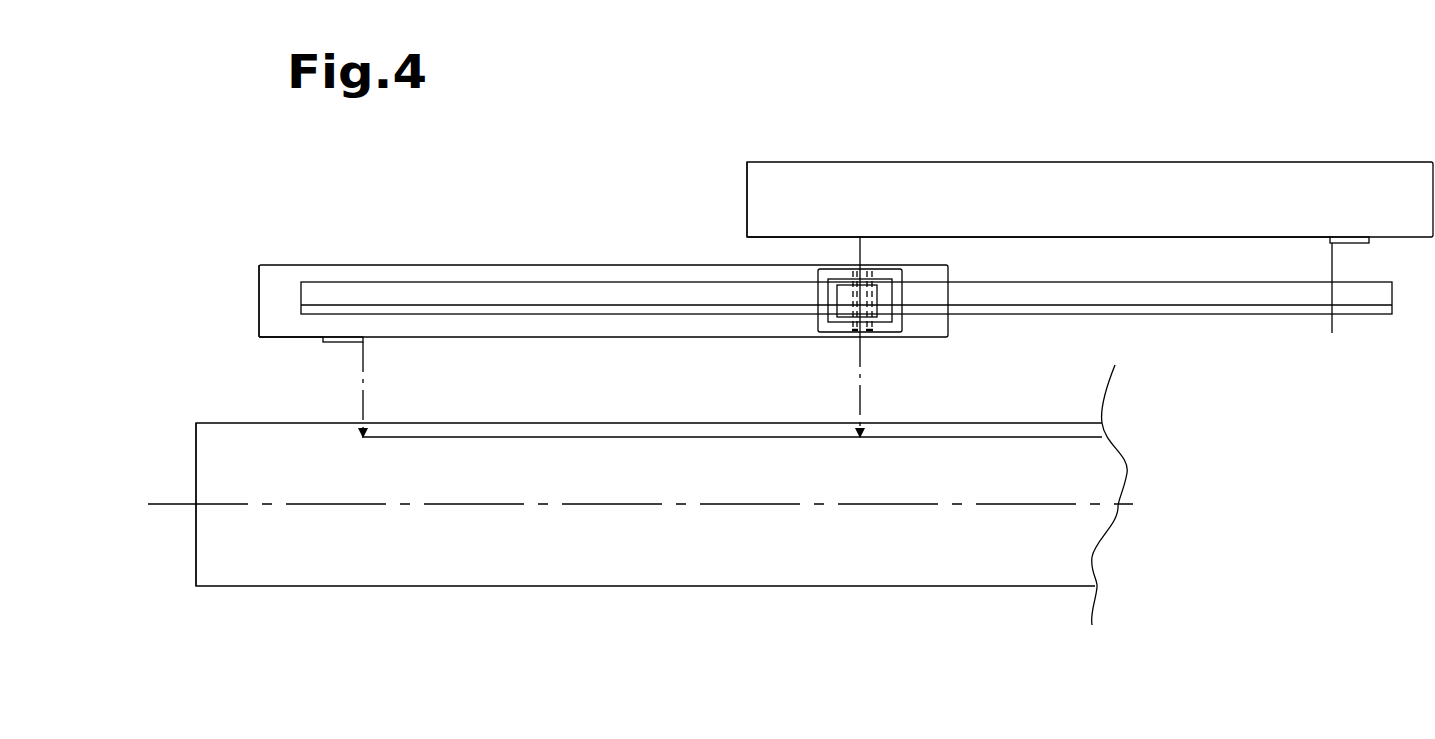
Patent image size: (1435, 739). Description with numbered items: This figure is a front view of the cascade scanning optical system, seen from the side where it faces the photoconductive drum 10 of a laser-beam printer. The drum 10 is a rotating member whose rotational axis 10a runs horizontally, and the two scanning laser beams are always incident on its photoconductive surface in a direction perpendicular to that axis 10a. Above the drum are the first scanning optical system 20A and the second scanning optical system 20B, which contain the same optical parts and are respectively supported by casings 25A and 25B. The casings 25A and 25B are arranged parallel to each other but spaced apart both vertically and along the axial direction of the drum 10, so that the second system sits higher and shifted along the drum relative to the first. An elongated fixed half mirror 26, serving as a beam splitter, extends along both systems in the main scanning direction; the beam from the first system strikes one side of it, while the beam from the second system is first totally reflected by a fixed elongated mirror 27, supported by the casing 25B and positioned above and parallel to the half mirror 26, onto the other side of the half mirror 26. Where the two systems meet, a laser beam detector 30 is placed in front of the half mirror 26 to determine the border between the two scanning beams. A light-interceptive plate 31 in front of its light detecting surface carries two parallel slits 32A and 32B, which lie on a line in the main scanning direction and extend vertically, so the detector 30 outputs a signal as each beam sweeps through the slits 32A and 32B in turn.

The photoconductive drum 10 is at (528, 565).
The rotational axis 10a is at (179, 503).
The first scanning optical system 20A is at (596, 262).
The second scanning optical system 20B is at (1041, 153).
The casing 25A is at (287, 287).
The casing 25B is at (903, 182).
The half mirror 26 is at (513, 293).
The mirror 27 is at (1038, 151).
The laser beam detector 30 is at (895, 330).
The light-interceptive plate 31 is at (825, 330).
The slit 32A is at (848, 265).
The slit 32B is at (883, 265).